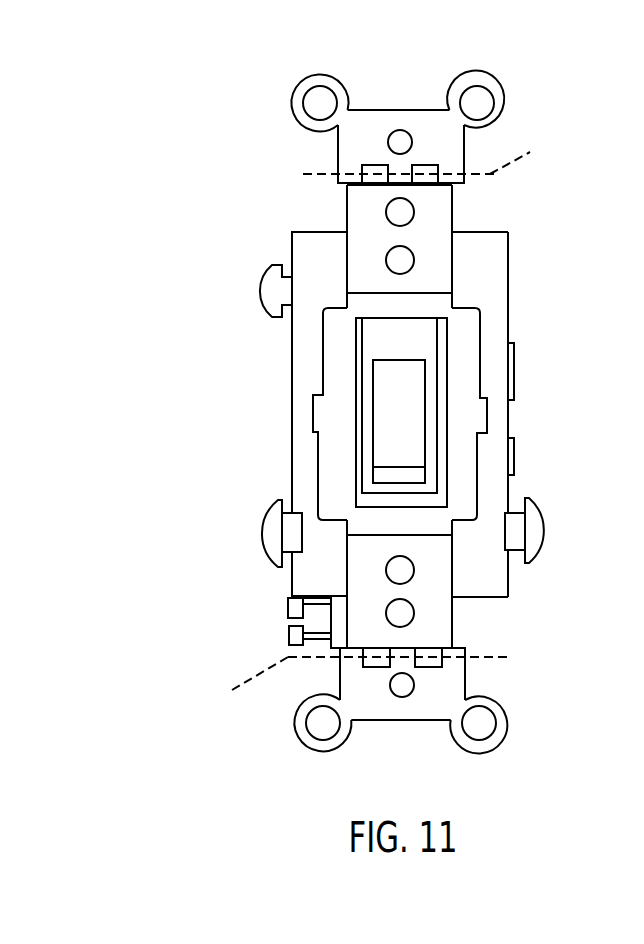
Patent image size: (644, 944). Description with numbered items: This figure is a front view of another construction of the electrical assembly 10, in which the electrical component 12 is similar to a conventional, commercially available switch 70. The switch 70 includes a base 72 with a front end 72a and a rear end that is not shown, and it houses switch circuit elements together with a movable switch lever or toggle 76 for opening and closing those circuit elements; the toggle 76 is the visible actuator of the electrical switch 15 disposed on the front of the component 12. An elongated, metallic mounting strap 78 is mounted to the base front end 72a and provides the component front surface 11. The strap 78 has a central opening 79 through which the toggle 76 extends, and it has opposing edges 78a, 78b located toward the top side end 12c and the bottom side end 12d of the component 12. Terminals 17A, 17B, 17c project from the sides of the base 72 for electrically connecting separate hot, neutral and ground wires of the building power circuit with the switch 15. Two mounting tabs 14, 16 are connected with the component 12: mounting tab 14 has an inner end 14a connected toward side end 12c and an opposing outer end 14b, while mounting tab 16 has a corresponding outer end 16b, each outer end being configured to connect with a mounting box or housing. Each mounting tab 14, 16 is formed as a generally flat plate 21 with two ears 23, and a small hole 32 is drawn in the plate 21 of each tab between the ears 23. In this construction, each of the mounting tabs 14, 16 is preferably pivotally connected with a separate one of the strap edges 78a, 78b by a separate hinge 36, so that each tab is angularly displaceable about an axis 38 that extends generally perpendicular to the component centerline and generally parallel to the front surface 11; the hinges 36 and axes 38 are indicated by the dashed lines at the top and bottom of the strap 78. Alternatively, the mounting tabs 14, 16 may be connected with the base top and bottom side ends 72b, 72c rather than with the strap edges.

The electrical assembly 10 is at (202, 150).
The front surface 11 is at (457, 392).
The electrical component 12 is at (199, 307).
The top side end 12c is at (443, 195).
The bottom side end 12d is at (438, 630).
The mounting tab 14 is at (400, 76).
The inner end 14a is at (345, 160).
The outer end 14b is at (413, 127).
The electrical switch 15 is at (333, 379).
The mounting tab 16 is at (373, 748).
The outer end 16b is at (433, 727).
The terminal 17A is at (546, 530).
The terminal 17B is at (262, 528).
The terminal 17c is at (260, 280).
The flat plate 21 is at (450, 138).
The ear 23 is at (305, 92).
The cover plate screw hole 32 is at (395, 138).
The hinge 36 is at (297, 169).
The axis 38 is at (380, 423).
The switch 70 is at (235, 356).
The base 72 is at (523, 262).
The front end 72a is at (495, 302).
The top side end 72b is at (502, 229).
The bottom side end 72c is at (503, 600).
The toggle 76 is at (383, 413).
The mounting strap 78 is at (335, 215).
The strap edge 78a is at (362, 188).
The strap edge 78b is at (357, 635).
The central opening 79 is at (437, 458).